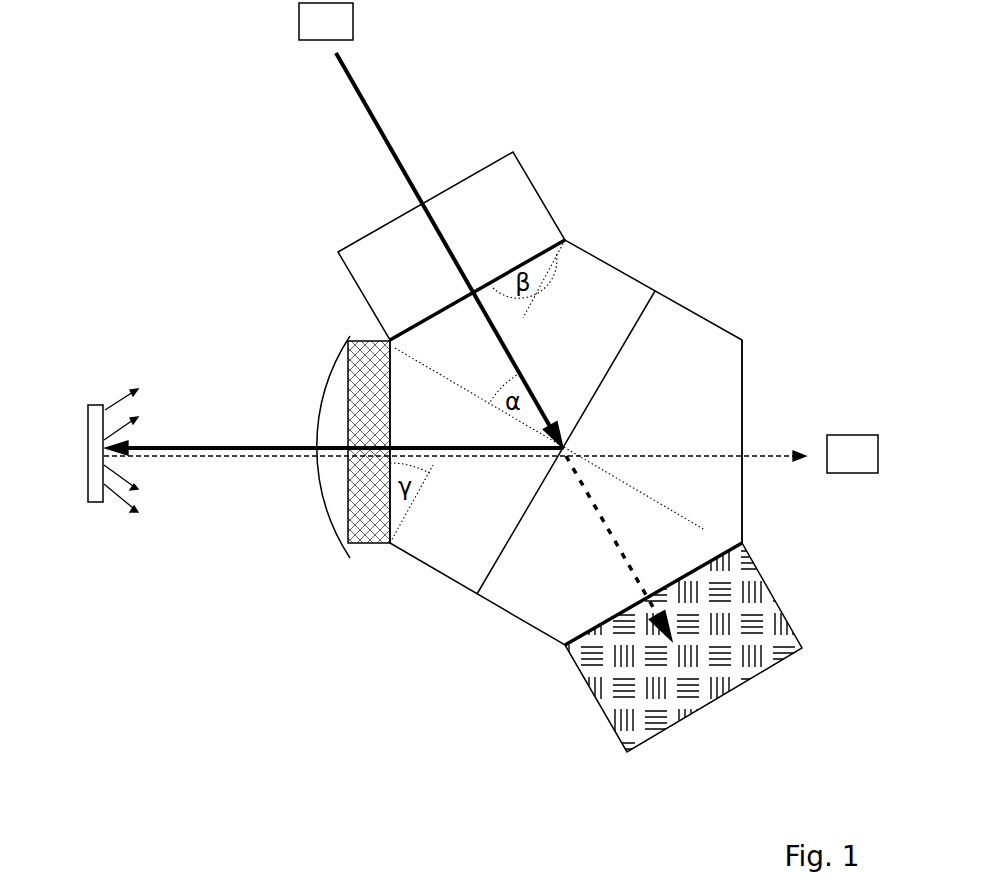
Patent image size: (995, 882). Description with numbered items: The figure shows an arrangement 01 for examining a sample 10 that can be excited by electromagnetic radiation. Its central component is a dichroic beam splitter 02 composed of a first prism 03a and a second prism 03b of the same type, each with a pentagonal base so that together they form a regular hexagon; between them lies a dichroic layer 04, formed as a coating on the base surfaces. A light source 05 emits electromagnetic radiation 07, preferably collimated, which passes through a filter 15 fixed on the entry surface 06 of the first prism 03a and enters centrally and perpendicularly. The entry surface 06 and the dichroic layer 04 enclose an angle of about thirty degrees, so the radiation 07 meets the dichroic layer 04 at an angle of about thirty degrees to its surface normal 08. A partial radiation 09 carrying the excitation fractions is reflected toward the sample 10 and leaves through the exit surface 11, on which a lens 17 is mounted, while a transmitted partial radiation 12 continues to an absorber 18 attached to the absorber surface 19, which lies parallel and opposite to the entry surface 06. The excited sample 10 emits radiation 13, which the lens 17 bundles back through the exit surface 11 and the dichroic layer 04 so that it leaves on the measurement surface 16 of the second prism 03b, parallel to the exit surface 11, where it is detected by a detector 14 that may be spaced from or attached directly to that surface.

The arrangement 01 is at (261, 685).
The dichroic beam splitter 02 is at (743, 362).
The first prism 03a is at (412, 528).
The second prism 03b is at (587, 607).
The dichroic layer 04 is at (626, 340).
The light source 05 is at (308, 21).
The entry surface 06 is at (425, 319).
The electromagnetic radiation 07 is at (396, 153).
The surface normal 08 is at (474, 394).
The partial radiation 09 is at (205, 446).
The sample 10 is at (97, 404).
The exit surface 11 is at (347, 402).
The partial radiation 12 is at (636, 578).
The radiation 13 is at (778, 452).
The detector 14 is at (849, 433).
The filter 15 is at (528, 225).
The measurement surface 16 is at (743, 500).
The lens 17 is at (363, 477).
The absorber 18 is at (766, 598).
The absorber surface 19 is at (732, 562).